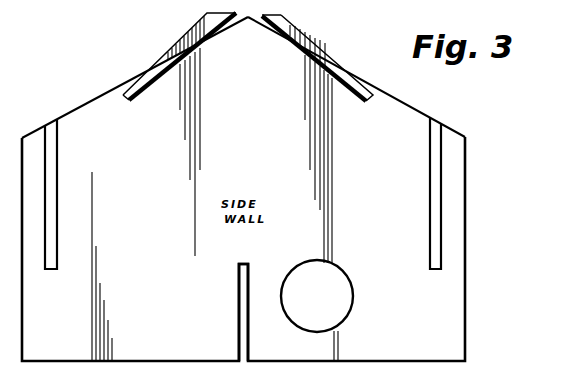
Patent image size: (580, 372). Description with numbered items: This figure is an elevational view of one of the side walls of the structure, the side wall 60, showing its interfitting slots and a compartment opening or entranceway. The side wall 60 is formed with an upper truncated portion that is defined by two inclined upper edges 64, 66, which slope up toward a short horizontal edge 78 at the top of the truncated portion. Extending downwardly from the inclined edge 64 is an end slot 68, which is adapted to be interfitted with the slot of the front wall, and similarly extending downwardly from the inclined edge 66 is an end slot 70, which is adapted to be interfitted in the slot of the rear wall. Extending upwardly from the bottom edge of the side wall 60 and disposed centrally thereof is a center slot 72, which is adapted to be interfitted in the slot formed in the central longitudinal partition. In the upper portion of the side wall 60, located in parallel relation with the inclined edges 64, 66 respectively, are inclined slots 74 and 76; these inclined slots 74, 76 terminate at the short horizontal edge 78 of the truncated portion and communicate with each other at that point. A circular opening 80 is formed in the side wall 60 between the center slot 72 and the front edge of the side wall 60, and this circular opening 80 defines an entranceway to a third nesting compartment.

The side wall 60 is at (463, 292).
The inclined upper edge 64 is at (419, 110).
The inclined upper edge 66 is at (108, 80).
The end slot 68 is at (429, 186).
The end slot 70 is at (58, 173).
The center slot 72 is at (238, 286).
The inclined slot 74 is at (292, 50).
The inclined slot 76 is at (149, 86).
The short horizontal edge 78 is at (284, 15).
The circular opening 80 is at (355, 294).